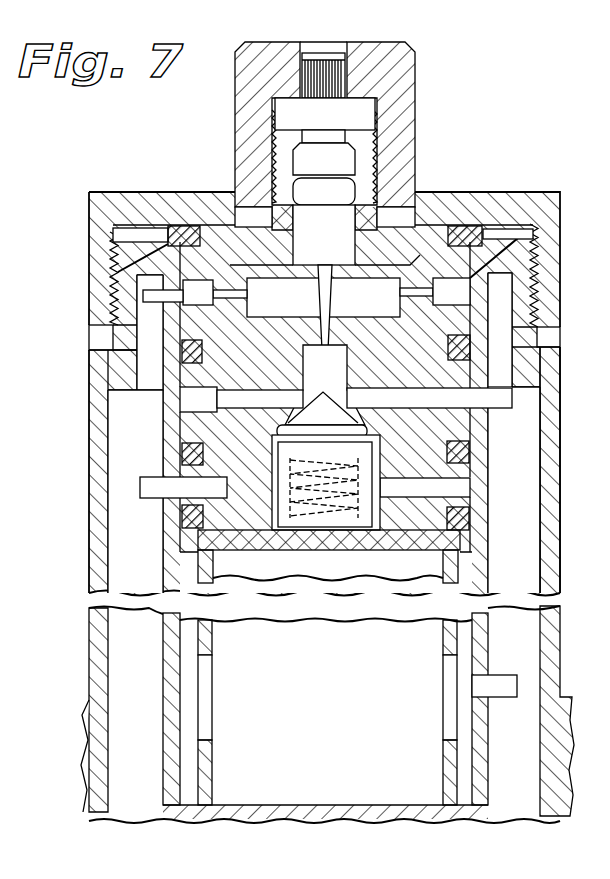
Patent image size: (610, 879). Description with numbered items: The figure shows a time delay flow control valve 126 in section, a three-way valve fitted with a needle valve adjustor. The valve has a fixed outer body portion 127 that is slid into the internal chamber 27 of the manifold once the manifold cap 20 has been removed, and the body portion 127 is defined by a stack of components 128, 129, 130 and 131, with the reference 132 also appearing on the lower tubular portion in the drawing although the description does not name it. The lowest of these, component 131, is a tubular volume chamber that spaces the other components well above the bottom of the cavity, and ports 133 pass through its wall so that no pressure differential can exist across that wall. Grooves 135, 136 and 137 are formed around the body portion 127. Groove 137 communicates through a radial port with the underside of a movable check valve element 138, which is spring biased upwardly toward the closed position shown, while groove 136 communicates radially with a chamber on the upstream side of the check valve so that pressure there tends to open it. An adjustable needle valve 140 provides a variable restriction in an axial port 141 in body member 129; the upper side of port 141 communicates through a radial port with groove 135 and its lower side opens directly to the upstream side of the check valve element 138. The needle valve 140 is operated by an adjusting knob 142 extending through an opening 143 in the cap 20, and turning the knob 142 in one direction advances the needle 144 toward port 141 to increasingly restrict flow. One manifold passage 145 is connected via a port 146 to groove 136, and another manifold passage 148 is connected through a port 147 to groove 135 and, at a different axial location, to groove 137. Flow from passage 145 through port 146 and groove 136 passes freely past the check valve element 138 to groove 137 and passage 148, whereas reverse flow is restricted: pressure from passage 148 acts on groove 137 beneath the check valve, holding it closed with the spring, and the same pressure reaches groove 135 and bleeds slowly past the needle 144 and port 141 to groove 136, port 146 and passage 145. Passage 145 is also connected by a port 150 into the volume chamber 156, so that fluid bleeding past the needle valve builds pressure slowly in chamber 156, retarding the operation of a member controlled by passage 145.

The cap 20 is at (497, 203).
The internal chamber 27 is at (178, 672).
The time delay flow control valve 126 is at (213, 432).
The outer body portion 127 is at (197, 540).
The component 128 is at (165, 325).
The body member 129 is at (180, 453).
The component 130 is at (235, 547).
The tubular volume chamber component 131 is at (213, 640).
The rod lower portion 132 is at (196, 730).
The ports 133 is at (206, 672).
The groove 135 is at (207, 279).
The groove 136 is at (190, 398).
The groove 137 is at (193, 493).
The check valve element 138 is at (345, 527).
The needle valve 140 is at (325, 263).
The axial port 141 is at (345, 340).
The adjusting knob 142 is at (414, 118).
The opening 143 is at (420, 197).
The needle 144 is at (331, 292).
The manifold passage 145 is at (528, 505).
The port 146 is at (500, 408).
The port 147 is at (143, 293).
The manifold passage 148 is at (127, 660).
The port 150 is at (493, 668).
The volume chamber 156 is at (325, 748).